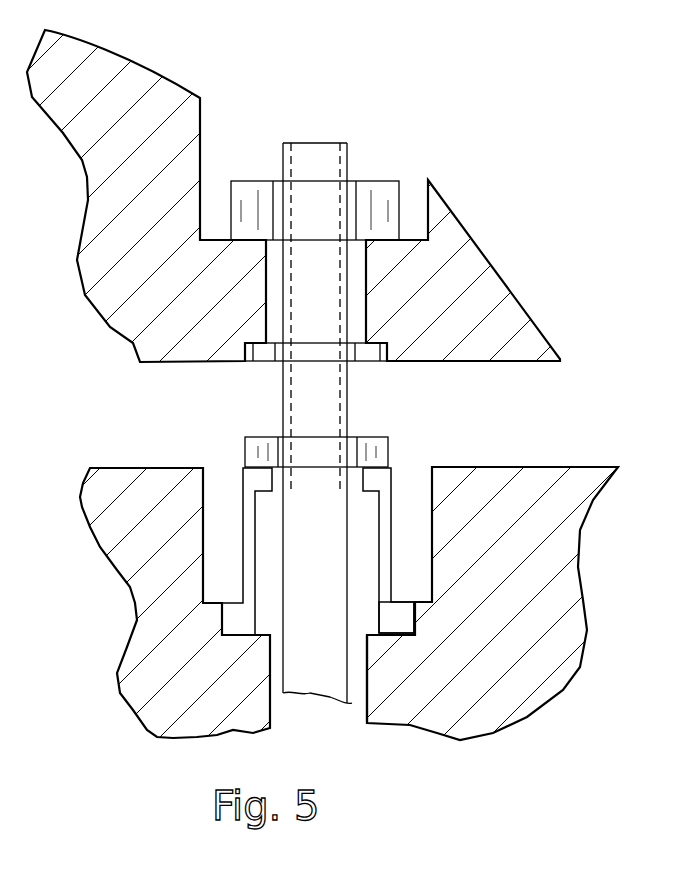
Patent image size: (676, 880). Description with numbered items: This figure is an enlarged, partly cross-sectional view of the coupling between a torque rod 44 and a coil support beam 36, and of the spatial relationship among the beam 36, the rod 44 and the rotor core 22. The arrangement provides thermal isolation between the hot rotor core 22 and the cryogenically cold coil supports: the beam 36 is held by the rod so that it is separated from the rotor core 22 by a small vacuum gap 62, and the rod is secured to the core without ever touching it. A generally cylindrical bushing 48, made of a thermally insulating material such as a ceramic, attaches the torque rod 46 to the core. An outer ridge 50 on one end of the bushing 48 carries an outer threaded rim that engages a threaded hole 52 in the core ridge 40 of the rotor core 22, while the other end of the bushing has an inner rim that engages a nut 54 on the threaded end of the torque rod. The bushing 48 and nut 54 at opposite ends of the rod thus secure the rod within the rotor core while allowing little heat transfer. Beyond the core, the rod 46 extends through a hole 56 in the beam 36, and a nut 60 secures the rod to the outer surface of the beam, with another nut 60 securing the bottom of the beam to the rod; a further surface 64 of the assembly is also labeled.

The rotor core 22 is at (142, 697).
The coil support beam 36 is at (504, 291).
The core ridge 40 is at (519, 688).
The torque rod 44 is at (358, 733).
The torque rod 46 is at (317, 160).
The bushing 48 is at (387, 552).
The outer ridge 50 is at (403, 618).
The threaded hole 52 is at (186, 468).
The nut 54 is at (380, 452).
The hole 56 is at (368, 290).
The nut 60 is at (372, 177).
The vacuum gap 62 is at (196, 412).
The surface 64 is at (117, 60).